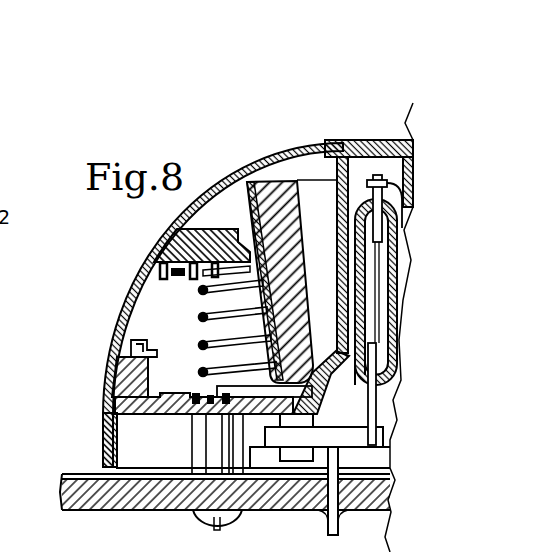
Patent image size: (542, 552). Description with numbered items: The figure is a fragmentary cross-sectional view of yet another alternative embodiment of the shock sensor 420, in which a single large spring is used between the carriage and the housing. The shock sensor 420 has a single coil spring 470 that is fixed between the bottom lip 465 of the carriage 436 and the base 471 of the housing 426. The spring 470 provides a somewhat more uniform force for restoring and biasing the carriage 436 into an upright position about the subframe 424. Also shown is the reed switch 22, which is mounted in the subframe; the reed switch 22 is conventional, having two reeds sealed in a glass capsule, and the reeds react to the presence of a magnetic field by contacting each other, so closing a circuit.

The shock sensor 420 is at (258, 98).
The subframe 424 is at (316, 156).
The carriage 436 is at (217, 228).
The bottom lip 465 is at (151, 272).
The coil spring 470 is at (199, 317).
The base 471 is at (178, 400).
The housing 426 is at (146, 424).
The reed switch 22 is at (393, 380).